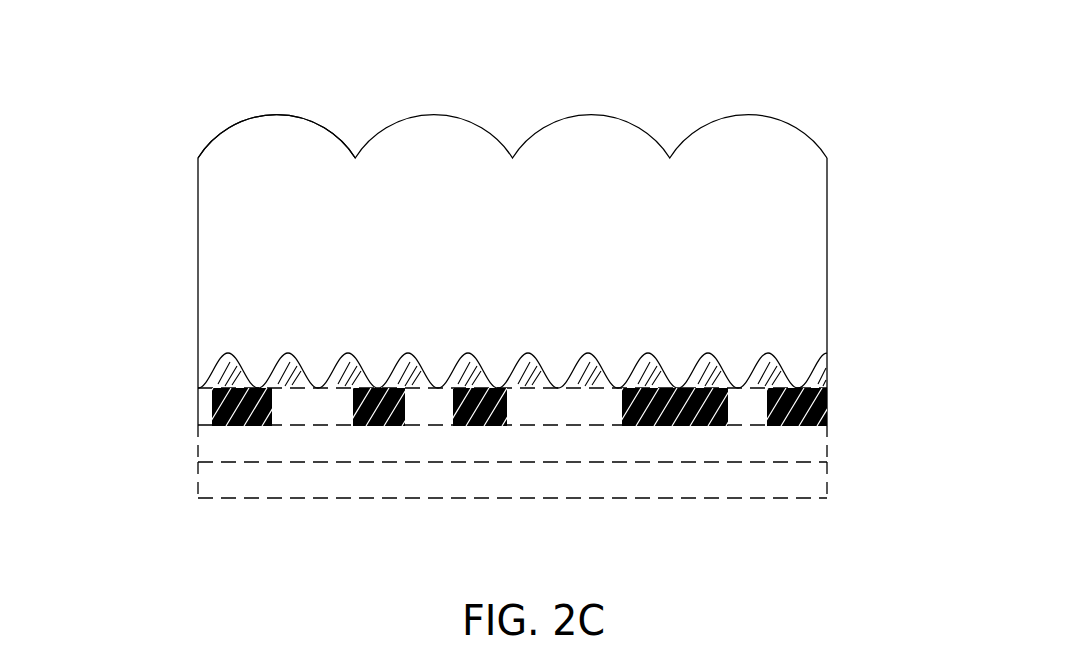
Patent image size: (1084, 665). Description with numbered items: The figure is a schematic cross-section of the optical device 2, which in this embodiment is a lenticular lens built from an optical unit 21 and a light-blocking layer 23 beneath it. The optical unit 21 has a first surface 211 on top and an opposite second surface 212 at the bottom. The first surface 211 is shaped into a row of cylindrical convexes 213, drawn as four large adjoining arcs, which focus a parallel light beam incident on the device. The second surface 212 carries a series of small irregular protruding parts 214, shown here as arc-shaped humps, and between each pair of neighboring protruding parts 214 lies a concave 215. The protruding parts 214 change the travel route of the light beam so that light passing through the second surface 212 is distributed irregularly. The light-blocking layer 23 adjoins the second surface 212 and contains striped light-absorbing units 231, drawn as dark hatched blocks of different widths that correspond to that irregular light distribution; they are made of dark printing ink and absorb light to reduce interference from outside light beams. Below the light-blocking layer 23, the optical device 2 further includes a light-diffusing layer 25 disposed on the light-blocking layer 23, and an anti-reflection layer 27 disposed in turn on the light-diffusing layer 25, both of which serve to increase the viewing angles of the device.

The optical device 2 is at (70, 22).
The optical unit 21 is at (827, 258).
The first surface 211 is at (715, 98).
The second surface 212 is at (282, 352).
The cylindrical convexes 213 is at (277, 112).
The irregular protruding parts 214 is at (260, 377).
The concave 215 is at (225, 366).
The light-blocking layer 23 is at (198, 407).
The striped light-absorbing units 231 is at (655, 427).
The light-diffusing layer 25 is at (816, 448).
The anti-reflection layer 27 is at (816, 490).